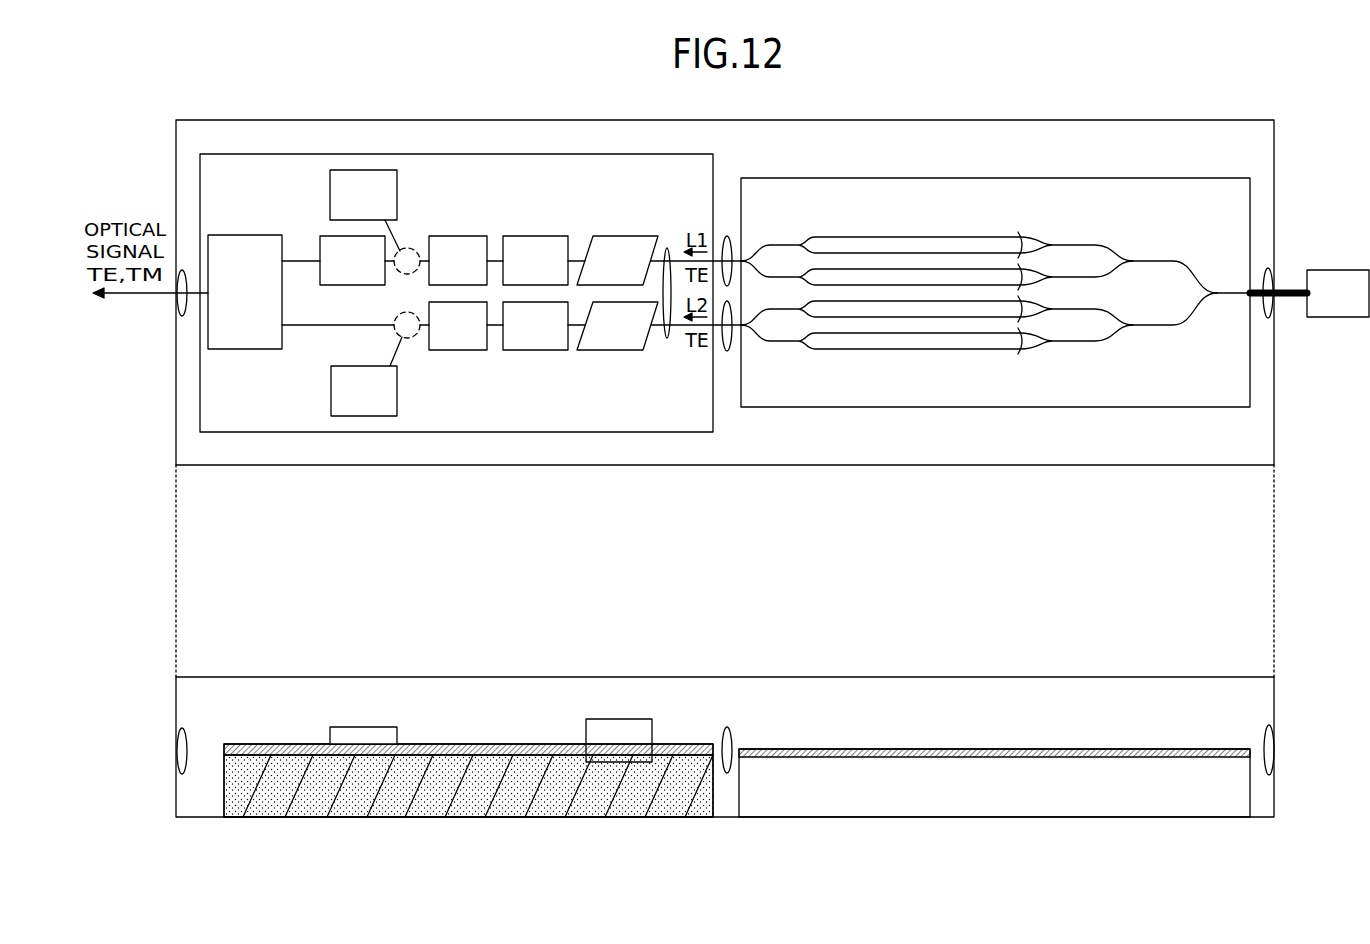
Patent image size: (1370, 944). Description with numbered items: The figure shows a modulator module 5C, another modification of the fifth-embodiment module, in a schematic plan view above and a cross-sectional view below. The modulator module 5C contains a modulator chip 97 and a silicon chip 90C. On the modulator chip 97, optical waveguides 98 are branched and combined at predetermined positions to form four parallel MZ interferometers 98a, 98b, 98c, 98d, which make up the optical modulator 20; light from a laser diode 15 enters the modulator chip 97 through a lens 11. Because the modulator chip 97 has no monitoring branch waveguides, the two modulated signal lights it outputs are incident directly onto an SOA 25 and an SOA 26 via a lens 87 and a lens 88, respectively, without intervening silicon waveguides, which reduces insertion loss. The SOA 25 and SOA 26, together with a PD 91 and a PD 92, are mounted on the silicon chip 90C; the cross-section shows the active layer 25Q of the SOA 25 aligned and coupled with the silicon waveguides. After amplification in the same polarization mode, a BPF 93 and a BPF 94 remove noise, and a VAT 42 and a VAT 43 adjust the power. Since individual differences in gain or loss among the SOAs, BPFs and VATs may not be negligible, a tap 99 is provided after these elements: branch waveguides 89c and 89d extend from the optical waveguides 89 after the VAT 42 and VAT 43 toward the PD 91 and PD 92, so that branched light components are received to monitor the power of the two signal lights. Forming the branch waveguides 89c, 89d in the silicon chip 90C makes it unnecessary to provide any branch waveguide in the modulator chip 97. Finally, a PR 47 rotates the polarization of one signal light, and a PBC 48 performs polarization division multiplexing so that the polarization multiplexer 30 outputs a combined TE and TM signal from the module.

The modulator module 5C is at (1212, 120).
The polarization multiplexer 30 is at (578, 112).
The silicon chip 90C is at (597, 154).
The PD 91 is at (397, 188).
The PD 92 is at (397, 396).
The PBC 48 is at (240, 235).
The PR 47 is at (325, 235).
The branch waveguide 89c is at (413, 250).
The branch waveguide 89d is at (405, 340).
The tap 99 is at (398, 306).
The VAT 42 is at (466, 236).
The VAT 43 is at (466, 350).
The BPF 93 is at (535, 236).
The BPF 94 is at (535, 352).
The SOA 25 is at (617, 236).
The active layer 25Q is at (628, 762).
The SOA 26 is at (617, 352).
The optical waveguide 89 is at (668, 248).
The lens 87 is at (728, 235).
The lens 88 is at (728, 352).
The optical modulator 20 is at (1243, 228).
The modulator chip 97 is at (1130, 178).
The optical waveguide 98 is at (1232, 288).
The MZ interferometer 98a is at (1040, 258).
The MZ interferometer 98b is at (1040, 290).
The MZ interferometer 98c is at (1040, 322).
The MZ interferometer 98d is at (1040, 354).
The lens 11 is at (1273, 305).
The laser diode 15 is at (1340, 270).